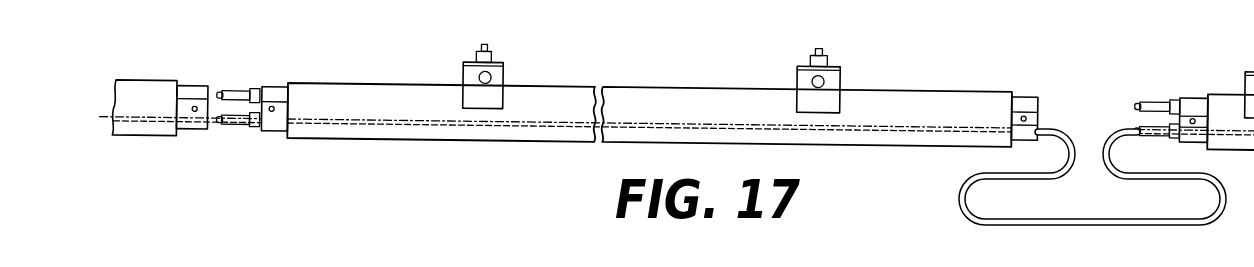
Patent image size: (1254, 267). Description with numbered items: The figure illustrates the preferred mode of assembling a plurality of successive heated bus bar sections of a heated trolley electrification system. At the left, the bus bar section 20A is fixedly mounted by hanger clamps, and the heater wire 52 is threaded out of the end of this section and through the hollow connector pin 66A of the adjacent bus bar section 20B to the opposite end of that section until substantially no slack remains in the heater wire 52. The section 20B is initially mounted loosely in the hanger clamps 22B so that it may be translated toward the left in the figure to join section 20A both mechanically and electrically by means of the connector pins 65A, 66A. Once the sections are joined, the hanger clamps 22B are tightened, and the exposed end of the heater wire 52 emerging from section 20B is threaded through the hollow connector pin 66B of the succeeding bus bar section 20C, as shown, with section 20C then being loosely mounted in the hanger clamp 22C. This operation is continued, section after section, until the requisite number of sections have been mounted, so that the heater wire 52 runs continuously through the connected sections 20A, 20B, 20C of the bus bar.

The bus bar section 20A is at (145, 129).
The bus bar section 20B is at (450, 132).
The bus bar section 20C is at (1238, 142).
The hanger clamps 22B is at (495, 82).
The hanger clamp 22C is at (1244, 84).
The heater wire 52 is at (1010, 179).
The connector pin 65A is at (231, 88).
The hollow connector pin 66A is at (233, 125).
The hollow connector pin 66B is at (1152, 137).